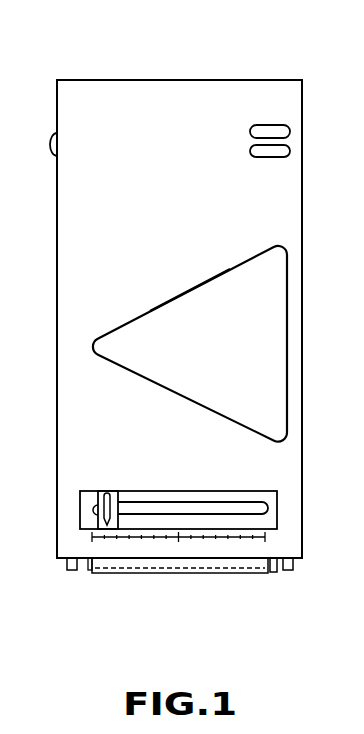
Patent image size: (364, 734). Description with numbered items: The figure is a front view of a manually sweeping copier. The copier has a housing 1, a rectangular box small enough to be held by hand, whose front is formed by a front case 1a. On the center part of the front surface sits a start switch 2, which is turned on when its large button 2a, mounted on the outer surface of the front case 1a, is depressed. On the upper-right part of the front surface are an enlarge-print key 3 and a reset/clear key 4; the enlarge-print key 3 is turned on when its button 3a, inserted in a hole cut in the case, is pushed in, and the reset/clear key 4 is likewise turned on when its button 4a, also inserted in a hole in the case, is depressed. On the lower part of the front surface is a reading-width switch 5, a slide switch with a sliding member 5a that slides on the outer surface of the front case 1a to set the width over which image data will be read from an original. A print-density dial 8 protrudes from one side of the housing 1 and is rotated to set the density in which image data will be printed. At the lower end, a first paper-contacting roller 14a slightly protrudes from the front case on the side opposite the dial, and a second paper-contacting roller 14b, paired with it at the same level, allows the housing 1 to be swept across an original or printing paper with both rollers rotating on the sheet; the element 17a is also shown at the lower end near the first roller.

The housing 1 is at (217, 79).
The front case 1a is at (67, 270).
The start switch 2 is at (271, 376).
The large button 2a is at (196, 293).
The enlarge-print key 3 is at (293, 120).
The button 3a is at (260, 127).
The reset/clear key 4 is at (290, 162).
The button 4a is at (262, 158).
The reading-width switch 5 is at (92, 485).
The sliding member 5a is at (120, 493).
The print-density dial 8 is at (50, 147).
The first paper-contacting roller 14a is at (293, 568).
The second paper-contacting roller 14b is at (72, 571).
The bottom connector 17a is at (274, 573).